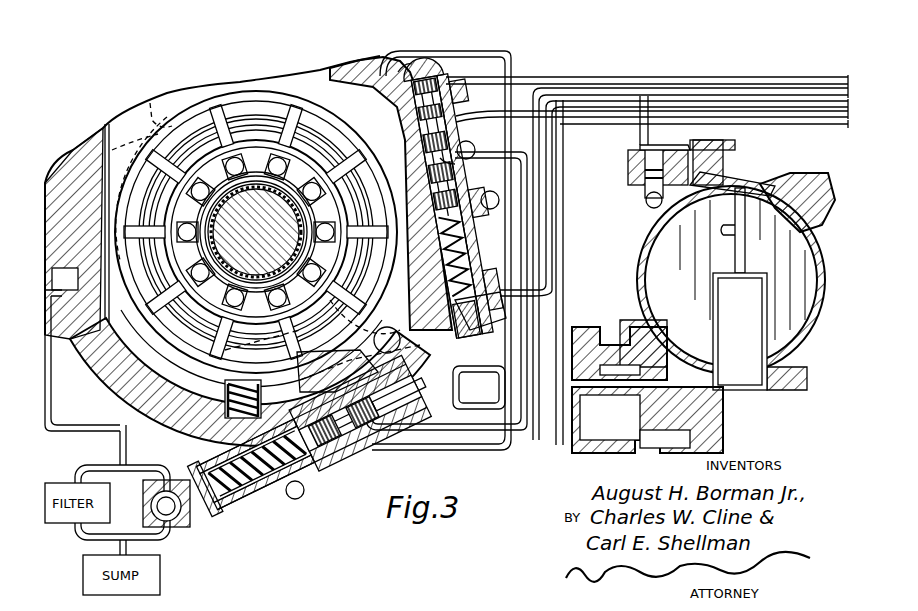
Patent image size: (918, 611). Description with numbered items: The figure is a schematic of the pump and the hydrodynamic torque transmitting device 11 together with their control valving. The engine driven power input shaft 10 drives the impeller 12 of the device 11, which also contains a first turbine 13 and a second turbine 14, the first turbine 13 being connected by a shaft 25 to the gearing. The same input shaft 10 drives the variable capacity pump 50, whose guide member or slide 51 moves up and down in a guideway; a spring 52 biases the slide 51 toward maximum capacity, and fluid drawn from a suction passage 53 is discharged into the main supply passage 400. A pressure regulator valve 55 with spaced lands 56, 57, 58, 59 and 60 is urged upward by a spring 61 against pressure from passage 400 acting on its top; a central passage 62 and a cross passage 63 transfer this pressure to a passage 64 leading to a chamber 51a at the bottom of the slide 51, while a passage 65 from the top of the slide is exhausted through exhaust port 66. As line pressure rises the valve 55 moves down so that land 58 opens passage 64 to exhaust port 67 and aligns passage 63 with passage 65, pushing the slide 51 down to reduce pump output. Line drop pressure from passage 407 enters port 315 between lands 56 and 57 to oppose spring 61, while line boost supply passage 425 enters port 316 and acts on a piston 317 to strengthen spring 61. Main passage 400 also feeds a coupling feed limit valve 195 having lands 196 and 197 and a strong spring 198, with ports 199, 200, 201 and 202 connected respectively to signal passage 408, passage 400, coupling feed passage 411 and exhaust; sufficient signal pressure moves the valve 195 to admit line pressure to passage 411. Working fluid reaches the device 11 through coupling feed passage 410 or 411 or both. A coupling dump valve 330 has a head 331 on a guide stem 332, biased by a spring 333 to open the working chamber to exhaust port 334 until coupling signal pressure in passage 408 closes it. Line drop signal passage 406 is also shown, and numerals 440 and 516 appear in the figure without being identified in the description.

The power input shaft 10 is at (250, 275).
The hydrodynamic torque transmitting device 11 is at (648, 294).
The impeller 12 is at (800, 330).
The first turbine 13 is at (633, 355).
The second turbine 14 is at (760, 385).
The shaft 25 is at (723, 436).
The pump 50 is at (112, 418).
The guide member 51 is at (160, 334).
The chamber 51a is at (322, 355).
The spring 52 is at (240, 380).
The suction passage 53 is at (50, 360).
The pressure regulator valve 55 is at (432, 225).
The valve land 56 is at (412, 88).
The valve land 57 is at (405, 120).
The valve land 58 is at (422, 150).
The valve land 59 is at (428, 195).
The valve land 60 is at (490, 226).
The spring 61 is at (495, 266).
The passage 62 is at (446, 98).
The cross passage 63 is at (425, 172).
The passage 64 is at (495, 388).
The passage 65 is at (432, 50).
The exhaust port 66 is at (497, 204).
The exhaust port 67 is at (460, 142).
The coupling feed limit valve 195 is at (350, 368).
The land 196 is at (400, 362).
The land 197 is at (340, 445).
The spring 198 is at (325, 478).
The port 199 is at (445, 372).
The port 200 is at (392, 420).
The port 201 is at (380, 445).
The port 202 is at (290, 494).
The port 315 is at (652, 110).
The port 316 is at (552, 296).
The piston 317 is at (492, 326).
The coupling dump valve 330 is at (633, 203).
The head 331 is at (668, 160).
The guide stem 332 is at (650, 212).
The spring 333 is at (632, 168).
The exhaust port 334 is at (640, 178).
The main supply passage 400 is at (828, 62).
The line drop signal passage 406 is at (470, 342).
The line drop pressure delivery passage 407 is at (838, 126).
The signal pressure passage 408 is at (790, 82).
The coupling feed passage 410 is at (768, 120).
The coupling feed passage 411 is at (570, 387).
The line boost supply passage 425 is at (808, 118).
The conduit 440 is at (548, 134).
The housing wall 516 is at (352, 64).